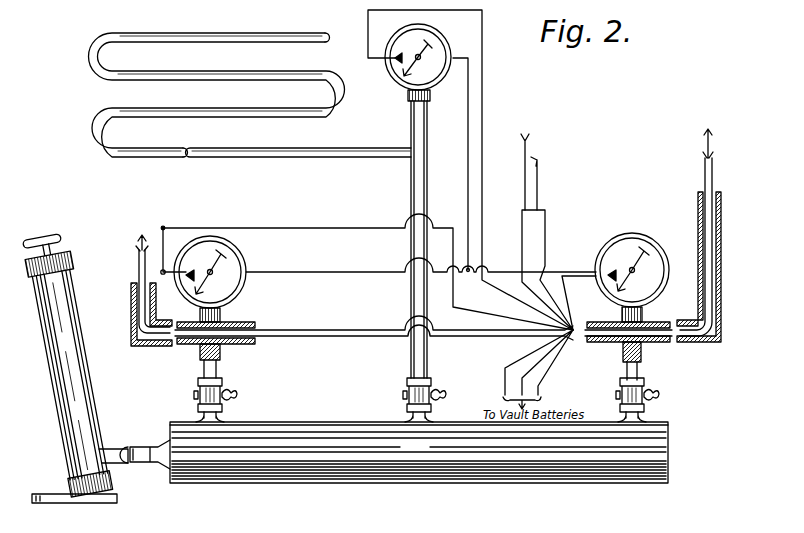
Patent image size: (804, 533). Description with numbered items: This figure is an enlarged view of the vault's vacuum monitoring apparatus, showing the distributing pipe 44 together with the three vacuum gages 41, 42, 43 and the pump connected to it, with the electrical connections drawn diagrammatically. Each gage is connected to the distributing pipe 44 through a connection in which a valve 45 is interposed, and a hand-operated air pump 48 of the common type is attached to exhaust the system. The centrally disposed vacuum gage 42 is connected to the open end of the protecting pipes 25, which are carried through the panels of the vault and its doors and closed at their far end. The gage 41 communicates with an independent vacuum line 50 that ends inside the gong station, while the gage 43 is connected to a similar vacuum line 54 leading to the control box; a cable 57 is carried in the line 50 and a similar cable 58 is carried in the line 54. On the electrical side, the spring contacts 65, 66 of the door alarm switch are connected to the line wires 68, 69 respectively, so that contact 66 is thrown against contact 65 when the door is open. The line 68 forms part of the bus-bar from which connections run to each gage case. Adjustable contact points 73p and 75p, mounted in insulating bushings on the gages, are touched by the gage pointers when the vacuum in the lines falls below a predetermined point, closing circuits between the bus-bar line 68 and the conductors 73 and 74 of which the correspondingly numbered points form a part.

The protecting pipes 25 is at (238, 83).
The vacuum gage 41 is at (237, 258).
The vacuum gage 42 is at (443, 53).
The vacuum gage 43 is at (656, 263).
The distributing pipe 44 is at (491, 484).
The valves 45 is at (238, 396).
The air pump 48 is at (92, 417).
The vacuum line 50 is at (133, 335).
The vacuum line 54 is at (720, 288).
The cable 57 is at (198, 334).
The cable 58 is at (620, 333).
The spring contact 65 is at (538, 182).
The spring contact 66 is at (529, 137).
The line wire 68 is at (336, 275).
The line wire 69 is at (545, 232).
The conductor 73 is at (367, 268).
The adjustable contact point 73p is at (193, 271).
The conductor 74 is at (402, 56).
The adjustable contact point 75p is at (614, 272).